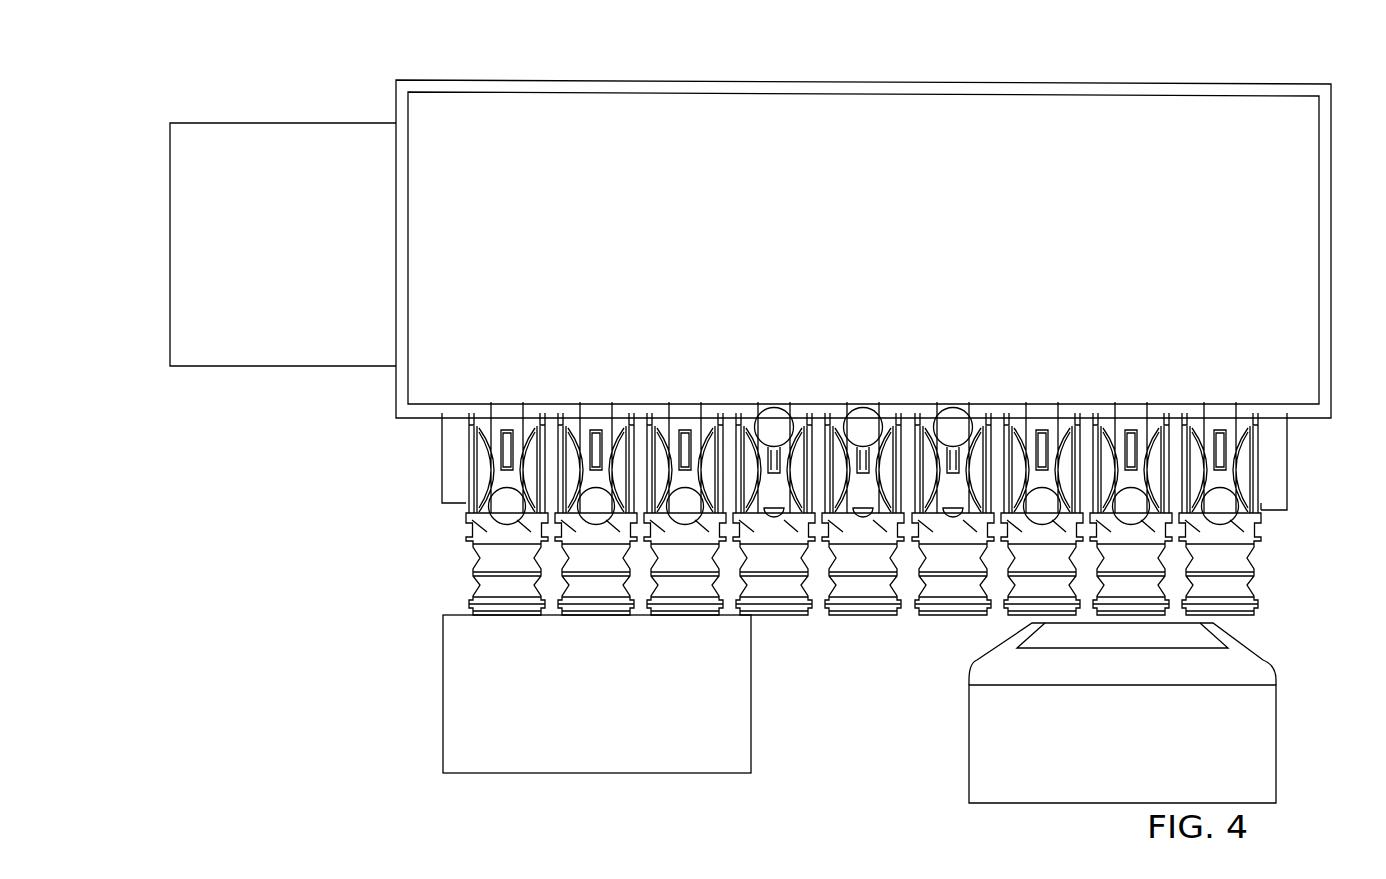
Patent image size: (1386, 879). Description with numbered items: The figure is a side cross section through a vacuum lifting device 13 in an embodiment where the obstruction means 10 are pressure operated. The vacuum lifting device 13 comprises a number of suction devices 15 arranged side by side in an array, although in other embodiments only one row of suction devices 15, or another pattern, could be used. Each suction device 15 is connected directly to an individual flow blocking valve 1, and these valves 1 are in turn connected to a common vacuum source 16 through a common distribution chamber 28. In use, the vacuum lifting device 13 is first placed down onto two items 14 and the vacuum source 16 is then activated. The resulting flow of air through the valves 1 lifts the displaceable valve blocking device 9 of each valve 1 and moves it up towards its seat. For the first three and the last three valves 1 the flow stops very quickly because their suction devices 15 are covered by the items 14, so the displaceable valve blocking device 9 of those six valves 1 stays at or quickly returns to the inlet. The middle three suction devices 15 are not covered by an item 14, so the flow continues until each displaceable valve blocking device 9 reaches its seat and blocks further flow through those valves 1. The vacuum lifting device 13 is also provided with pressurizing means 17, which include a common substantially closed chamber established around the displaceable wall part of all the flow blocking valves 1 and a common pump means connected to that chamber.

The vacuum lifting device 13 is at (370, 75).
The common distribution chamber 28 is at (942, 168).
The common vacuum source 16 is at (283, 172).
The item 14 is at (470, 727).
The obstruction means 10 is at (490, 452).
The flow blocking valve 1 is at (478, 461).
The displaceable valve blocking device 9 is at (507, 508).
The suction device 15 is at (488, 575).
The pressurizing means 17 is at (1268, 490).